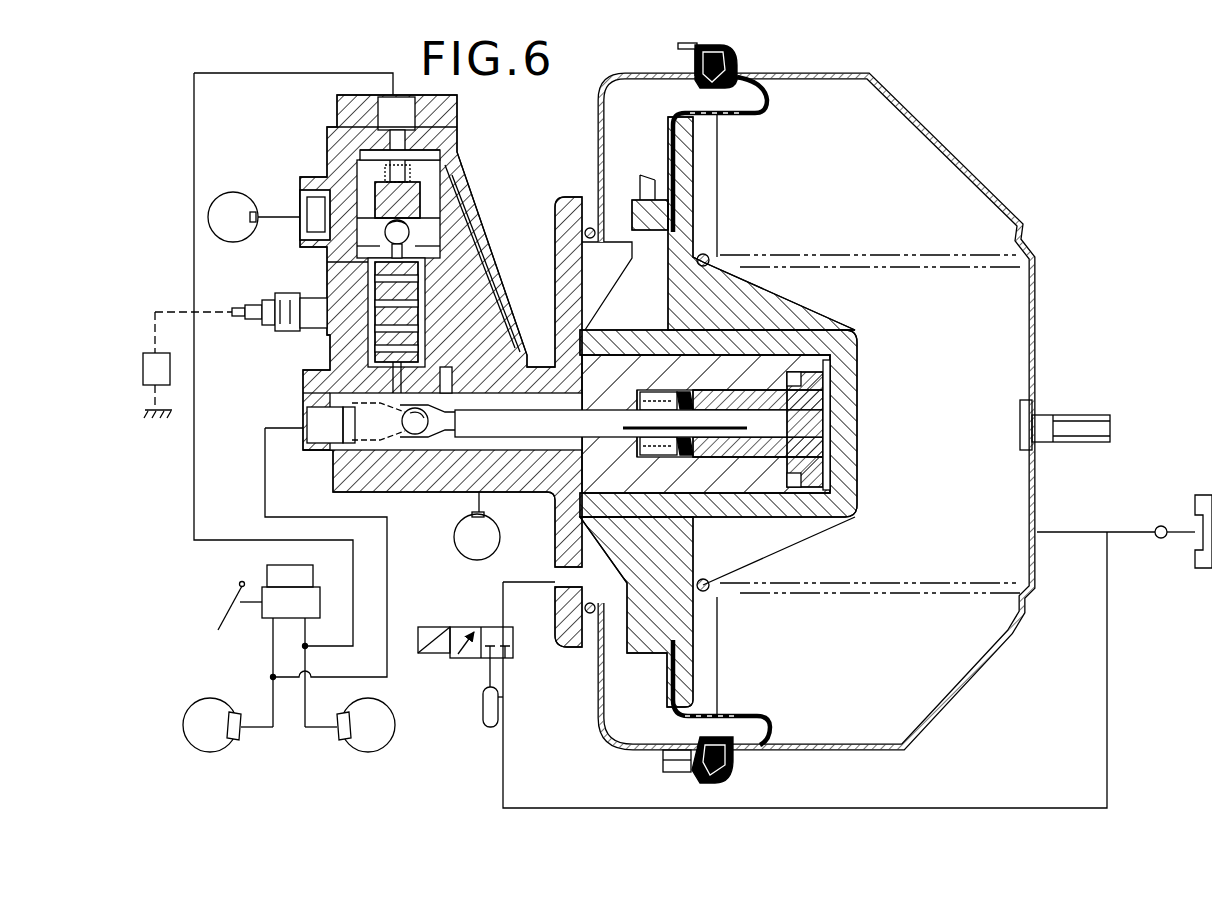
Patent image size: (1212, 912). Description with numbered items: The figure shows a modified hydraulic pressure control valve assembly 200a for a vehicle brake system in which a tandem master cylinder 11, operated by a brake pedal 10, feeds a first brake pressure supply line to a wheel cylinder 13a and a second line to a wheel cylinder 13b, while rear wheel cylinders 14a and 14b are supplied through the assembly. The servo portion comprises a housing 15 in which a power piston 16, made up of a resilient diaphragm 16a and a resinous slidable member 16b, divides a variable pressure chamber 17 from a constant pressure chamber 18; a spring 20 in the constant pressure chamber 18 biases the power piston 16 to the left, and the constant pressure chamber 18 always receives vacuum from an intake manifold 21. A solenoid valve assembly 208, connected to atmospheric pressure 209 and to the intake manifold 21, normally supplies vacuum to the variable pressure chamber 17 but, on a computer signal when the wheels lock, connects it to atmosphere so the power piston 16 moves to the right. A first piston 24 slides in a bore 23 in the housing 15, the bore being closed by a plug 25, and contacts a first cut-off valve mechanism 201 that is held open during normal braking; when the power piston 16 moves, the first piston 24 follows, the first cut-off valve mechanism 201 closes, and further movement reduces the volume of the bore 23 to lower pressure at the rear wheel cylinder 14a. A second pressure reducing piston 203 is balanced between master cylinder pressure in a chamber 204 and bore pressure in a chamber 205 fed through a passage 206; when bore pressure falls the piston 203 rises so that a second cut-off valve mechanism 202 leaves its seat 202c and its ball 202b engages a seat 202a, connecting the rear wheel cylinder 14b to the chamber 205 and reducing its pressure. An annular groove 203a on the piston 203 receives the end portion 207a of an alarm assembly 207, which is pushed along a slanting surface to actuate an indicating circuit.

The brake pedal 10 is at (204, 626).
The tandem master cylinder 11 is at (291, 646).
The wheel cylinder 13a is at (238, 730).
The front right wheel cylinder 13b is at (338, 738).
The rear right wheel cylinder 14a is at (501, 537).
The rear left wheel cylinder 14b is at (243, 212).
The housing 15 is at (1003, 653).
The power piston 16 is at (702, 662).
The resilient diaphragm 16a is at (777, 717).
The resinous slidable member 16b is at (687, 230).
The variable pressure chamber 17 is at (640, 716).
The constant pressure chamber 18 is at (932, 523).
The spring 20 is at (1008, 590).
The intake manifold 21 is at (1193, 507).
The bore 23 is at (572, 445).
The first piston 24 is at (570, 425).
The plug 25 is at (797, 393).
The hydraulic pressure control valve assembly 200a is at (528, 352).
The first cut-off valve mechanism 201 is at (417, 452).
The second cut-off valve mechanism 202 is at (412, 224).
The seat 202a is at (360, 217).
The ball 202b is at (385, 232).
The seat 202c is at (378, 224).
The second pressure reducing piston 203 is at (378, 337).
The annular groove 203a is at (478, 378).
The chamber 204 is at (393, 462).
The chamber 205 is at (405, 230).
The passage 206 is at (418, 248).
The alarm assembly 207 is at (257, 327).
The end portion 207a is at (253, 310).
The solenoid valve assembly 208 is at (462, 664).
The atmospheric pressure 209 is at (487, 727).